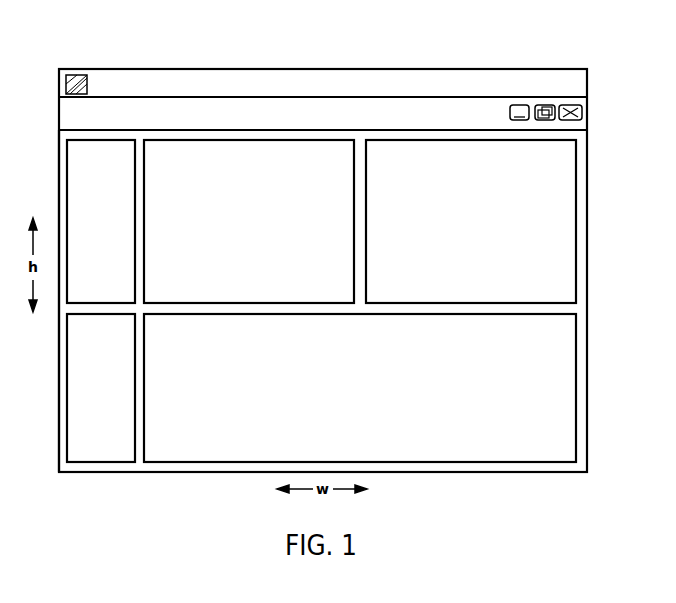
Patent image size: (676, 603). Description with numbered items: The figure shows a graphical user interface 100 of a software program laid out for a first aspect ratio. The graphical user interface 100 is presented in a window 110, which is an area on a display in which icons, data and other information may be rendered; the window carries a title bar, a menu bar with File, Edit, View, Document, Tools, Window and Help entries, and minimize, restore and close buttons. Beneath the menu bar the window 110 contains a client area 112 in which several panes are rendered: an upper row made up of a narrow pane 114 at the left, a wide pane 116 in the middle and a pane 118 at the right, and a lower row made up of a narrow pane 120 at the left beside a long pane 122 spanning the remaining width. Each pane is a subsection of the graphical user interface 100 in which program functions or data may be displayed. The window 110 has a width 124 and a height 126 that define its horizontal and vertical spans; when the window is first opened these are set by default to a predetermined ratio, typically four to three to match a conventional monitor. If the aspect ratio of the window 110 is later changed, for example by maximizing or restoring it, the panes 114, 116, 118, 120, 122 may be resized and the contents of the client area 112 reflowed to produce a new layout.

The graphical user interface 100 is at (587, 85).
The window 110 is at (587, 117).
The client area 112 is at (587, 170).
The pane 114 is at (67, 175).
The pane 116 is at (200, 140).
The pane 118 is at (576, 227).
The pane 120 is at (67, 415).
The pane 122 is at (576, 410).
The width 124 is at (166, 473).
The height 126 is at (59, 456).